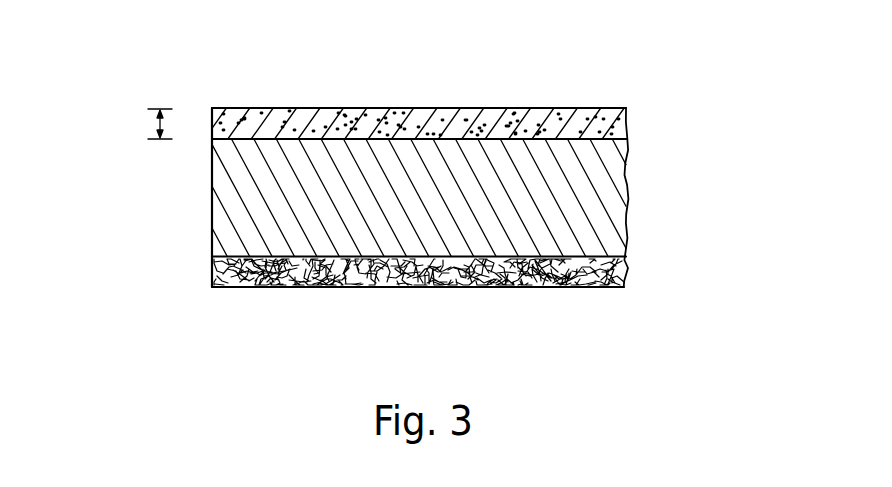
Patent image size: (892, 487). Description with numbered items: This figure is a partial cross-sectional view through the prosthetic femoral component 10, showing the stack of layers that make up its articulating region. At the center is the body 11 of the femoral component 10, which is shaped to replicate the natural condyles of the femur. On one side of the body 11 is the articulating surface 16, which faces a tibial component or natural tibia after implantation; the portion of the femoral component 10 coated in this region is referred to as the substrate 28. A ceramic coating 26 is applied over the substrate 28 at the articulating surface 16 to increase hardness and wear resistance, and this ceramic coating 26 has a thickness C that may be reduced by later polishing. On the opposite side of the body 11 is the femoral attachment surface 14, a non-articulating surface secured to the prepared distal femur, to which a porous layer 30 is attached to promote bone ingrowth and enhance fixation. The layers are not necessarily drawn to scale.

The femoral component 10 is at (472, 199).
The body 11 is at (600, 210).
The femoral attachment surface 14 is at (419, 312).
The articulating surface 16 is at (410, 85).
The ceramic coating 26 is at (258, 127).
The substrate 28 is at (376, 140).
The porous layer 30 is at (262, 275).
The thickness C is at (147, 123).